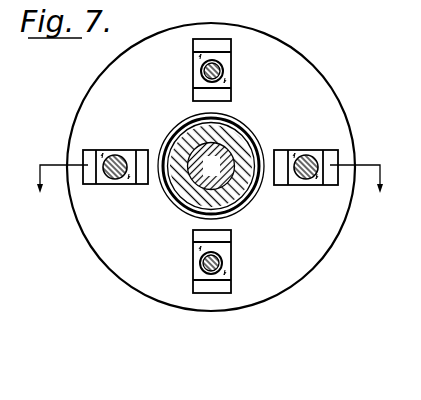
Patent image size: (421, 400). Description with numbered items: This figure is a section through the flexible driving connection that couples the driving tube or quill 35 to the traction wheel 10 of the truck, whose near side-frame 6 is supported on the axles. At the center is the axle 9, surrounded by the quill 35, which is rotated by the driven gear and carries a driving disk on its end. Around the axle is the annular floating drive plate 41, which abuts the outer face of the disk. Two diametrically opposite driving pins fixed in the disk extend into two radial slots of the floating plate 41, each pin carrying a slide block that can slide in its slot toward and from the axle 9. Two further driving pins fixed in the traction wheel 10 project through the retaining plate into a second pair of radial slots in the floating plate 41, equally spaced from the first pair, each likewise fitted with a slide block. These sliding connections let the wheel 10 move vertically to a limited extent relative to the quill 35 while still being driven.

The annular floating drive plate 41 is at (341, 103).
The driving tube or quill 35 is at (250, 135).
The traction wheel 10 is at (194, 192).
The axle 9 is at (211, 166).
The near side-frame 6 is at (209, 198).